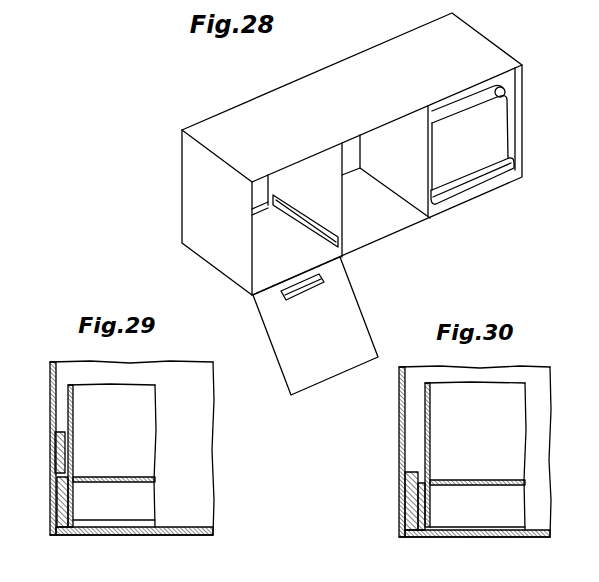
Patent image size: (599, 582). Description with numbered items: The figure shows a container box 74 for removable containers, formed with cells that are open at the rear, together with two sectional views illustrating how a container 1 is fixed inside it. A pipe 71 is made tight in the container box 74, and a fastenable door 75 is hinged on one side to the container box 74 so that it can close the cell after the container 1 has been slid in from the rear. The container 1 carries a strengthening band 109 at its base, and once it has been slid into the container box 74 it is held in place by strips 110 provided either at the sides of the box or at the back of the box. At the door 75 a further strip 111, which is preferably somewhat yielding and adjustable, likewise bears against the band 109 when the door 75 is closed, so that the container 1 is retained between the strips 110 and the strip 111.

In FIG. 28, the container 1 is at (470, 137).
In FIG. 29, the container 1 is at (72, 439).
In FIG. 30, the container 1 is at (432, 437).
In FIG. 28, the pipe 71 is at (318, 163).
In FIG. 28, the container box 74 is at (352, 154).
In FIG. 29, the container box 74 is at (53, 397).
In FIG. 30, the container box 74 is at (475, 451).
In FIG. 28, the door 75 is at (315, 326).
In FIG. 28, the strengthening band 109 is at (458, 193).
In FIG. 29, the strengthening band 109 is at (58, 537).
In FIG. 30, the strengthening band 109 is at (420, 537).
In FIG. 28, the strips 110 is at (307, 217).
In FIG. 29, the strips 110 is at (54, 462).
In FIG. 30, the strips 110 is at (404, 493).
In FIG. 28, the strip 111 is at (302, 292).